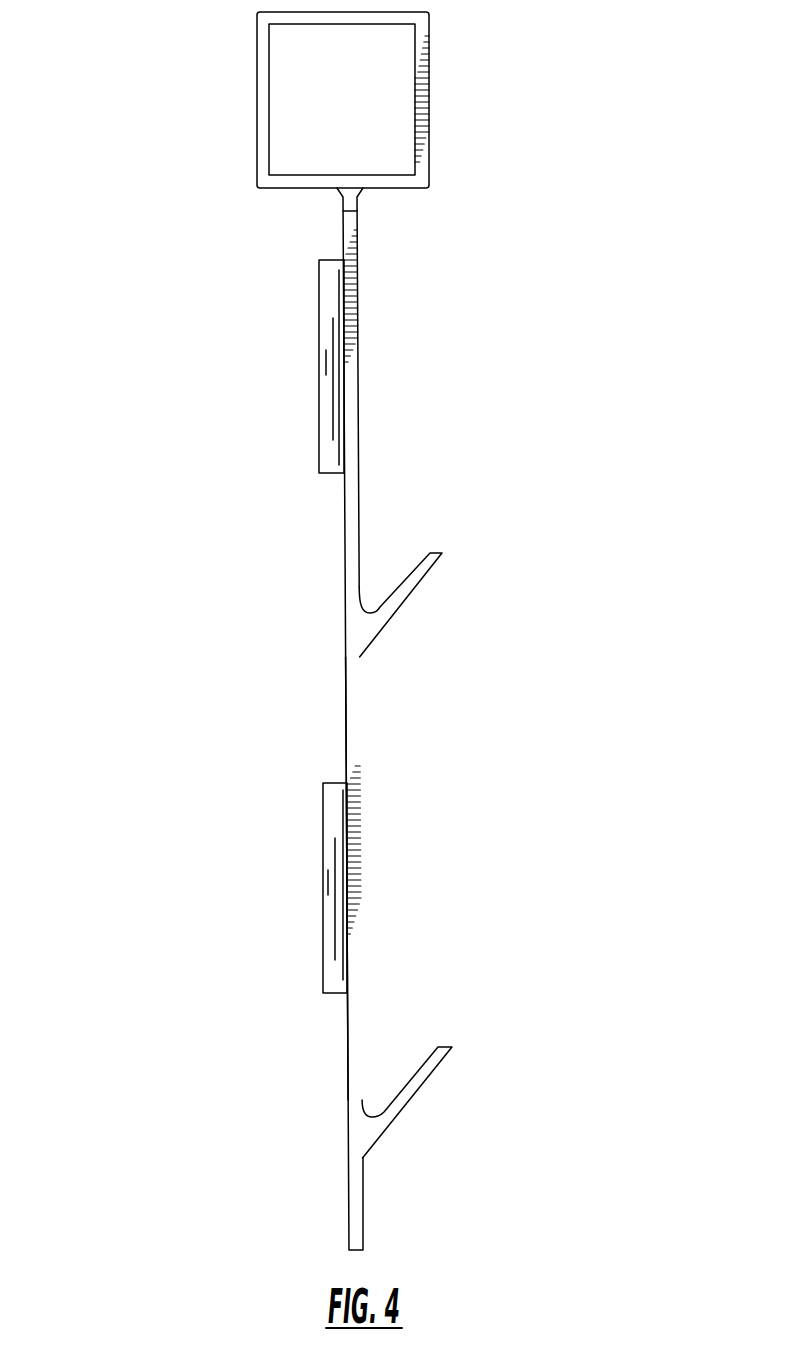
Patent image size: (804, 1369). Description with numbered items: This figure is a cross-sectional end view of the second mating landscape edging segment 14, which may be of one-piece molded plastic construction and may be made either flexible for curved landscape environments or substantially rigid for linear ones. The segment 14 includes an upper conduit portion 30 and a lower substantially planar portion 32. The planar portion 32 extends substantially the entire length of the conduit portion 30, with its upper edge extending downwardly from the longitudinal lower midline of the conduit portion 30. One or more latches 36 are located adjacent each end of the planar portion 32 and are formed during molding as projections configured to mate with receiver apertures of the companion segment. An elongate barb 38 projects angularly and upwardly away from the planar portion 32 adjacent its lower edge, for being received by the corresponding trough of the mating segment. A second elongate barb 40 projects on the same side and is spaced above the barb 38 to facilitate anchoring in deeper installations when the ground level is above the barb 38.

The landscape edging segment 14 is at (101, 276).
The upper conduit portion 30 is at (421, 126).
The lower substantially planar portion 32 is at (355, 852).
The latch 36 is at (332, 785).
The elongate barb 38 is at (428, 1070).
The elongate barb 40 is at (432, 560).